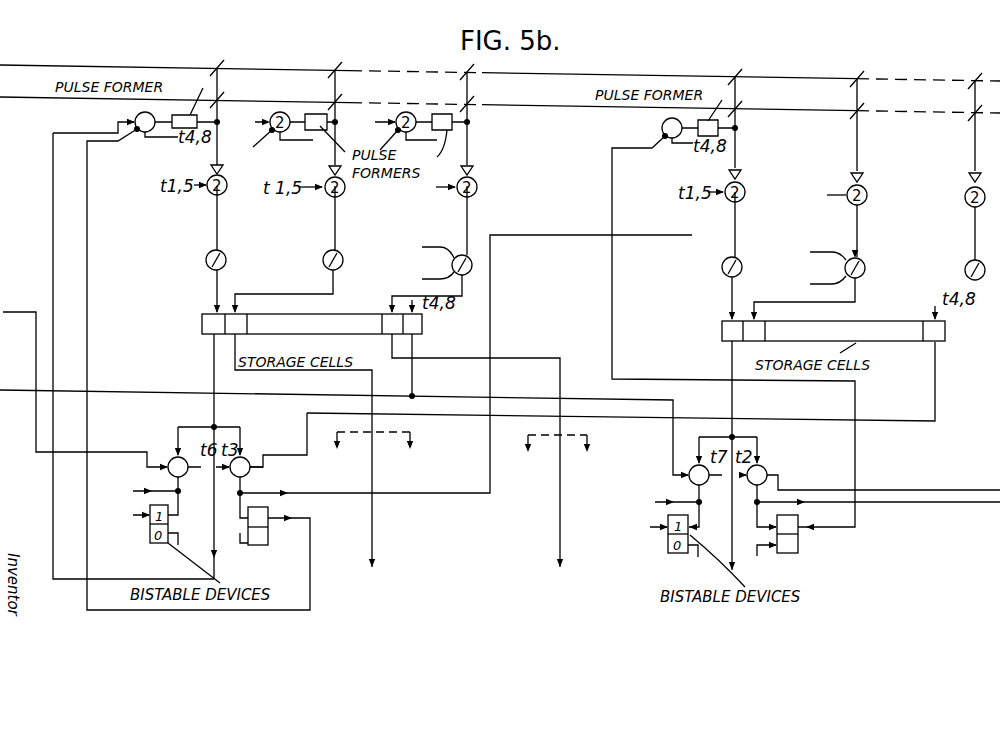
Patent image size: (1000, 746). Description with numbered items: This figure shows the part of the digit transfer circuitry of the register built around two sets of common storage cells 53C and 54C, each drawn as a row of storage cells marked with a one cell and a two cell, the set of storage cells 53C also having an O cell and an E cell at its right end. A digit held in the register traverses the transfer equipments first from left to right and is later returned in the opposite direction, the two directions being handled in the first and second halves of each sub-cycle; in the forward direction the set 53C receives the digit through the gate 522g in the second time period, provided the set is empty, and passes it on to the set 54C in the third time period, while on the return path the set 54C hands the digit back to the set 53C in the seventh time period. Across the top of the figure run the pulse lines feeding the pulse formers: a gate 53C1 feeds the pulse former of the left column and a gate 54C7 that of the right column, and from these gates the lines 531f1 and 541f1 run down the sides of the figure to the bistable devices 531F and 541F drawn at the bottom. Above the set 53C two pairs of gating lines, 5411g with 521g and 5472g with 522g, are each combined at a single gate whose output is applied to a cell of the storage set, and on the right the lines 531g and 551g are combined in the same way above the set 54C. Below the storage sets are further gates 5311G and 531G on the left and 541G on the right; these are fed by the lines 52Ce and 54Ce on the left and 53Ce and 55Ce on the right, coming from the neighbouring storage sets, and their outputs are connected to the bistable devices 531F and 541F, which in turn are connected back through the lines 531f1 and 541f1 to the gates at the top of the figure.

The pulse former gate 53C1 is at (135, 112).
The feedback line 531f1 is at (198, 368).
The gate input line 5411g is at (208, 253).
The gate input line 521g is at (208, 266).
The gate input line 5472g is at (325, 253).
The gate 522g is at (325, 266).
The set of common storage cells 53C is at (355, 337).
The gate 5311G is at (153, 458).
The gate input line 52Ce is at (85, 395).
The gate 531G is at (262, 456).
The gate input line 54Ce is at (281, 468).
The bistable device 531F is at (228, 580).
The pulse former gate 54C7 is at (660, 128).
The feedback line 541f1 is at (733, 331).
The gate input line 531g is at (723, 260).
The gate input line 551g is at (723, 273).
The set of common storage cells 54C is at (833, 320).
The gate input line 53Ce is at (667, 476).
The gate 541G is at (789, 466).
The gate input line 55Ce is at (883, 479).
The bistable device 541F is at (750, 587).